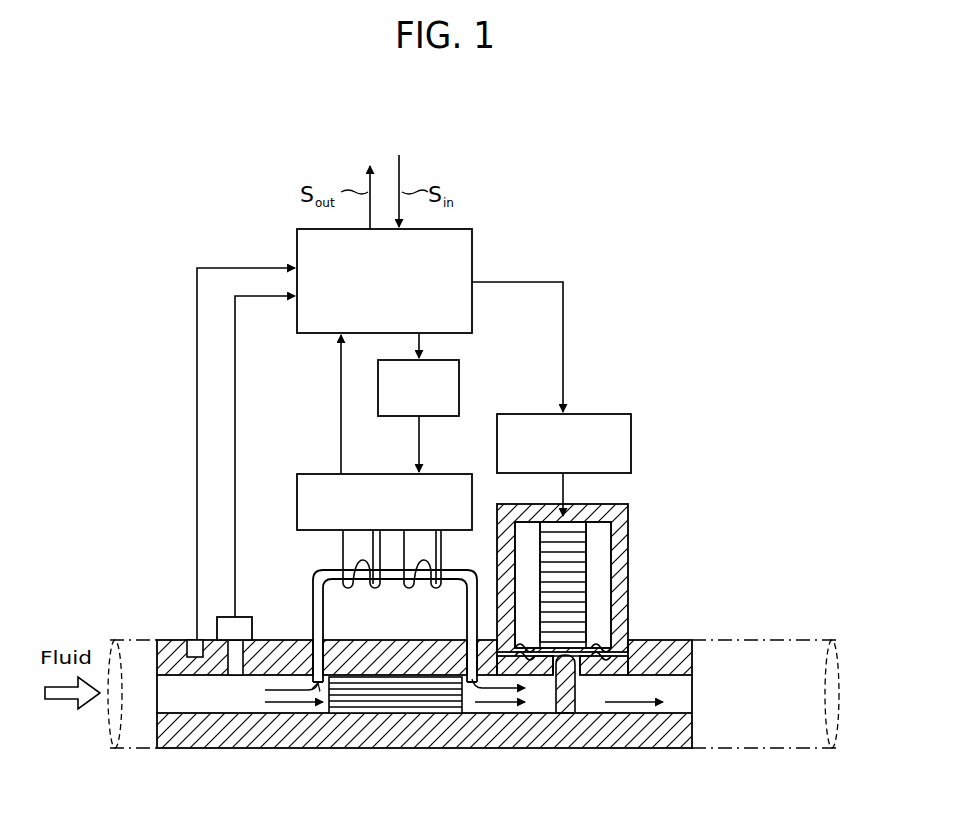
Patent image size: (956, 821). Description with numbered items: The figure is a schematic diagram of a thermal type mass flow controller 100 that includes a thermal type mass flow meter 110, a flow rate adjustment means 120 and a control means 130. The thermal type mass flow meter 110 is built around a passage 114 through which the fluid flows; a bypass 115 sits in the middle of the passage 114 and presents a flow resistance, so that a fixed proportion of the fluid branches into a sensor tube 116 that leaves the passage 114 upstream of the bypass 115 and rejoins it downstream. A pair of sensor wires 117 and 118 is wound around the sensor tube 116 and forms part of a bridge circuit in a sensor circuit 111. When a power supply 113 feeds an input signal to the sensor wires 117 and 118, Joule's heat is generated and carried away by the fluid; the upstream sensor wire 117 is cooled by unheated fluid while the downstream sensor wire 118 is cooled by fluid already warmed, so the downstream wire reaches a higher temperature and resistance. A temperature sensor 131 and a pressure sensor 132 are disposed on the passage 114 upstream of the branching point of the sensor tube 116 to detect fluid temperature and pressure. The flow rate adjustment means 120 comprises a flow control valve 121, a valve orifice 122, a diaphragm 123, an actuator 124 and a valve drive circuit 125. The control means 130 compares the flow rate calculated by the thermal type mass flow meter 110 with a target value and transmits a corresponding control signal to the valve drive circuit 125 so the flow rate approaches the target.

The thermal type mass flow controller 100 is at (801, 273).
The thermal type mass flow meter 110 is at (167, 407).
The sensor circuit 111 is at (376, 474).
The power supply 113 is at (460, 387).
The passage 114 is at (238, 700).
The bypass 115 is at (393, 700).
The sensor tube 116 is at (312, 580).
The sensor wire 117 is at (372, 586).
The sensor wire 118 is at (434, 586).
The flow rate adjustment means 120 is at (709, 506).
The flow control valve 121 is at (600, 684).
The valve orifice 122 is at (556, 690).
The diaphragm 123 is at (604, 648).
The actuator 124 is at (583, 566).
The valve drive circuit 125 is at (632, 447).
The control means 130 is at (535, 263).
The temperature sensor 131 is at (192, 638).
The pressure sensor 132 is at (222, 615).